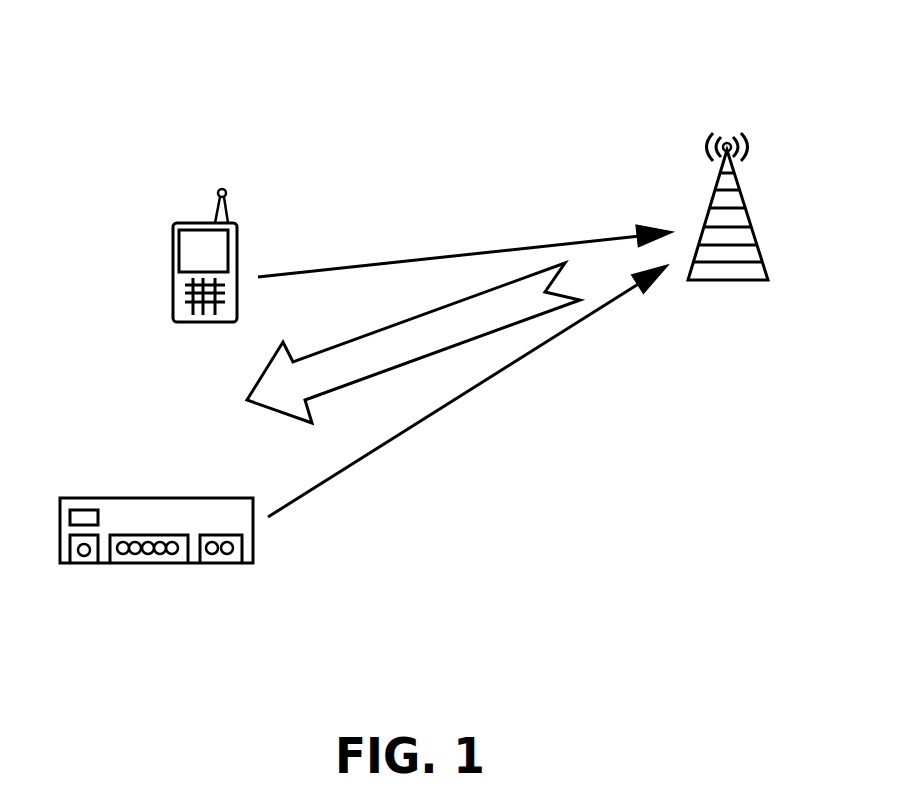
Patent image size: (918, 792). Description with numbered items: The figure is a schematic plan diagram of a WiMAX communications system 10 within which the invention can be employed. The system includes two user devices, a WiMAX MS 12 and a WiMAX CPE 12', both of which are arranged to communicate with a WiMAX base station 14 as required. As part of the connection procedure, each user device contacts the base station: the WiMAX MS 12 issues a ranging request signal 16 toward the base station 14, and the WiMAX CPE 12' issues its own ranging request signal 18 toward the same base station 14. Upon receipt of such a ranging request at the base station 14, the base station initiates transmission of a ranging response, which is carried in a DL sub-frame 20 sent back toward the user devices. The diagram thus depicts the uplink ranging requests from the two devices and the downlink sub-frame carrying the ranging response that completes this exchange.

The WiMAX communications system 10 is at (795, 139).
The WiMAX MS 12 is at (163, 255).
The WiMAX CPE 12' is at (138, 490).
The WiMAX base station 14 is at (762, 262).
The ranging request signal 16 is at (460, 255).
The ranging request signal 18 is at (468, 393).
The DL sub-frame 20 is at (388, 357).